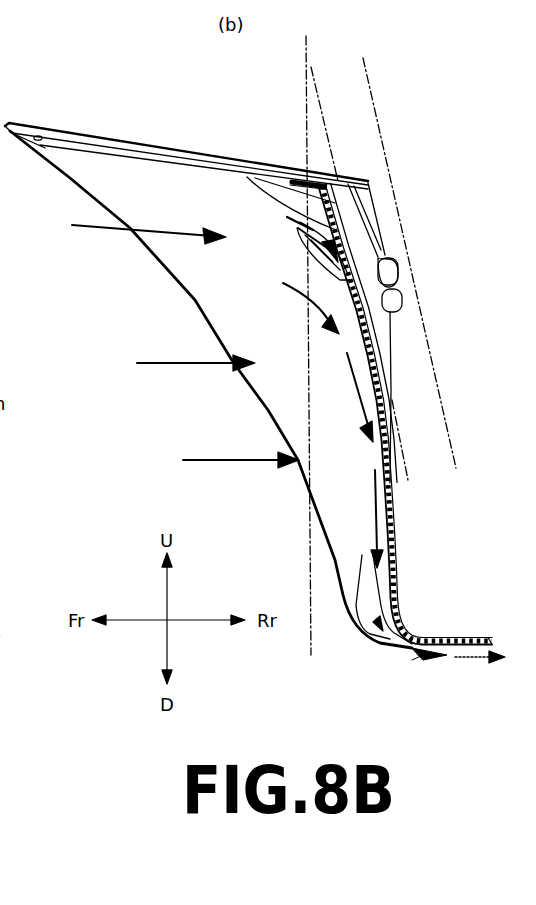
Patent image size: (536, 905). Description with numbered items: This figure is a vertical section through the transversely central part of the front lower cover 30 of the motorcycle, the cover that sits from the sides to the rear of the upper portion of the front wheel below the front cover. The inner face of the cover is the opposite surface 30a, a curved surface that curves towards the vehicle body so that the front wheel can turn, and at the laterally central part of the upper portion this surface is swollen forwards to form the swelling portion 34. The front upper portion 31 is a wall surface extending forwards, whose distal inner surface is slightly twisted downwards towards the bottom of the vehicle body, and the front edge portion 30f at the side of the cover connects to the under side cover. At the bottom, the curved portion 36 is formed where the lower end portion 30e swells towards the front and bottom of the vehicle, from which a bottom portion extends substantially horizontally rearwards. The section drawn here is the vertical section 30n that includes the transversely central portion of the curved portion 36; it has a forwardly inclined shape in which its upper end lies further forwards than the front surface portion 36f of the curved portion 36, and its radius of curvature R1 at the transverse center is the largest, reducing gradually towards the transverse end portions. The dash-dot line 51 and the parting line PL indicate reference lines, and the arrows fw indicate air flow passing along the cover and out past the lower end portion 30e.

The front lower cover 30 is at (401, 158).
The opposite surface 30a is at (238, 227).
The lower end portion 30e is at (447, 667).
The front edge portion 30f is at (190, 246).
The vertical section 30n is at (375, 366).
The front upper portion 31 is at (60, 150).
The swelling portion 34 is at (361, 237).
The curved portion 36 is at (381, 638).
The front surface portion 36f is at (385, 620).
The rear window glass line 51 is at (371, 82).
The parting line PL is at (305, 57).
The radius of curvature at transverse center R1 is at (411, 624).
The air flow fw is at (95, 228).